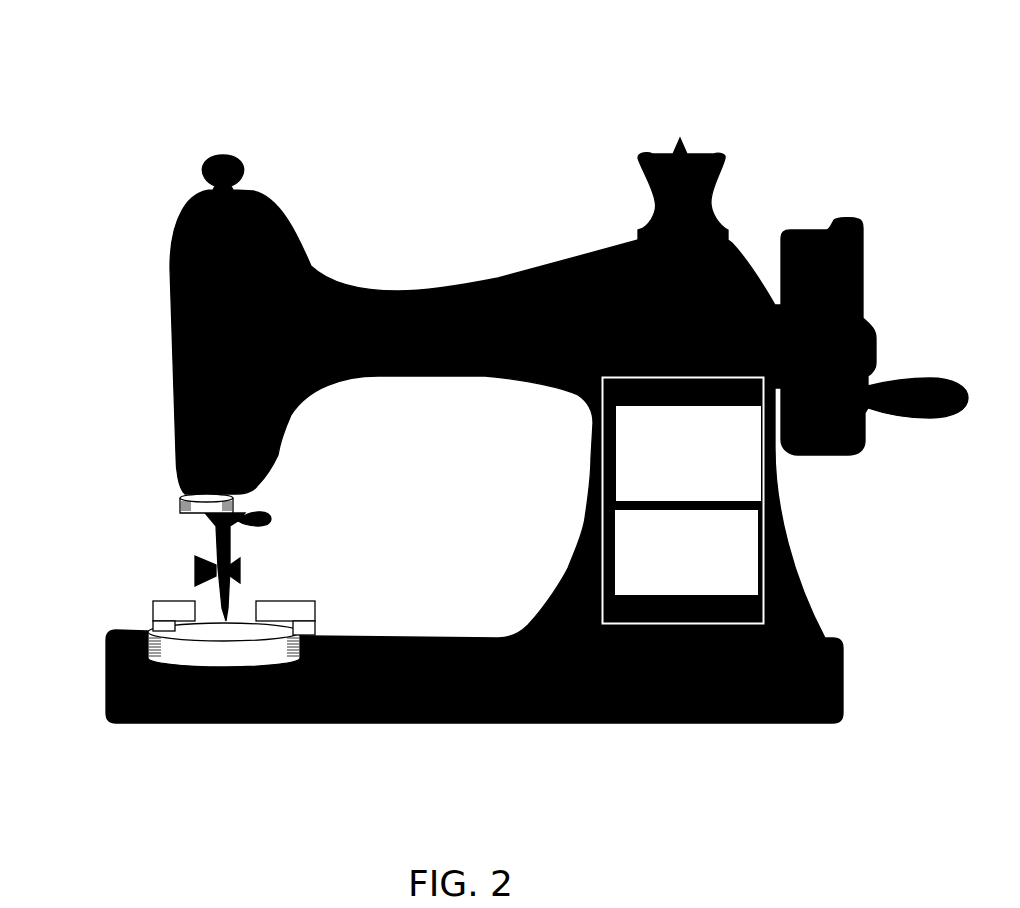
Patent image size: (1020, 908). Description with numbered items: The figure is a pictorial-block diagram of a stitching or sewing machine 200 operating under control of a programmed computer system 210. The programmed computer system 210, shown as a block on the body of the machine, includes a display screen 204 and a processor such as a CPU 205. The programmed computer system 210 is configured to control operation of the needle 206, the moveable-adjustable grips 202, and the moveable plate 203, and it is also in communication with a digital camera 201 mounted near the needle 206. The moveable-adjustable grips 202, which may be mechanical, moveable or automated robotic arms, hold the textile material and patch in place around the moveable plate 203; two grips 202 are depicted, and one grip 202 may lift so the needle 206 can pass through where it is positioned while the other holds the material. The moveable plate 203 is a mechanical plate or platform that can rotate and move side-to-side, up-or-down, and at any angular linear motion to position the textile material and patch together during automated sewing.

The sewing machine 200 is at (802, 57).
The digital camera 201 is at (175, 498).
The moveable-adjustable grips 202 is at (167, 593).
The moveable plate 203 is at (140, 625).
The display screen 204 is at (688, 453).
The CPU 205 is at (686, 552).
The needle 206 is at (227, 600).
The programmed computer system 210 is at (683, 500).